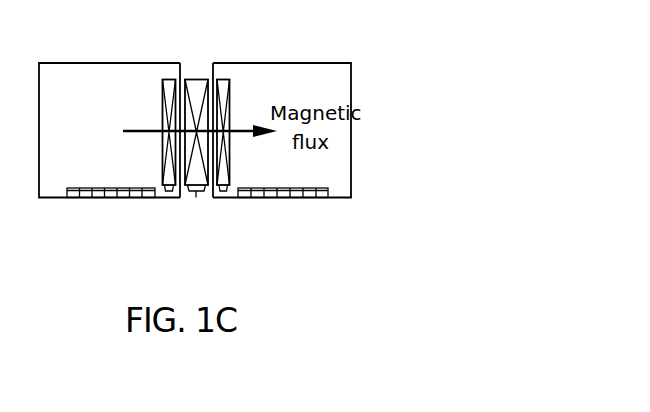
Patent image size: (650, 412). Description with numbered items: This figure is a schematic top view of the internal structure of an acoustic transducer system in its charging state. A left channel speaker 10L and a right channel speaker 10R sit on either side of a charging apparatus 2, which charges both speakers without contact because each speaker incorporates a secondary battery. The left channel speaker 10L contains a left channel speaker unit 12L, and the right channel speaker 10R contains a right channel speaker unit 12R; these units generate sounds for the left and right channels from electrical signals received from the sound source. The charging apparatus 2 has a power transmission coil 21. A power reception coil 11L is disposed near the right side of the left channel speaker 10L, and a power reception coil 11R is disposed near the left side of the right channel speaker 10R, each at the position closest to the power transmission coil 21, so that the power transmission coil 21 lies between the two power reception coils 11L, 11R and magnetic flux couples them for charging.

The left channel speaker 10L is at (120, 63).
The right channel speaker 10R is at (295, 63).
The charging apparatus 2 is at (193, 63).
The power reception coil 11L is at (169, 191).
The power reception coil 11R is at (223, 191).
The left channel speaker unit 12L is at (112, 198).
The right channel speaker unit 12R is at (282, 198).
The power transmission coil 21 is at (197, 191).